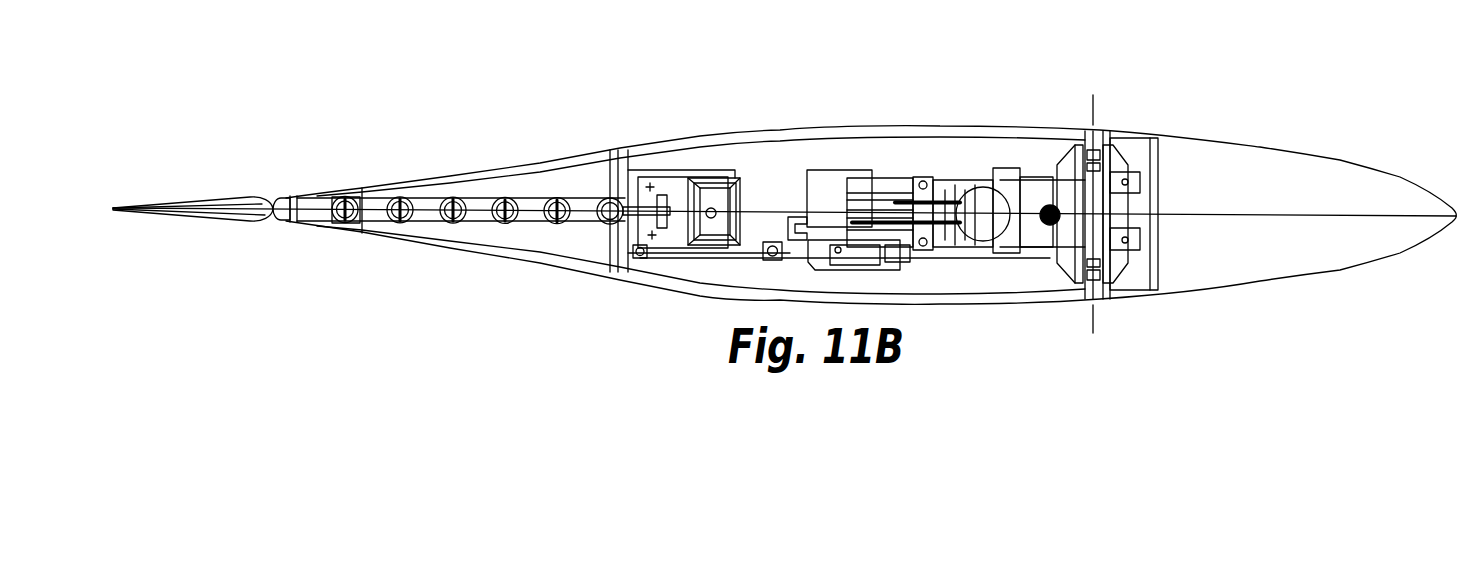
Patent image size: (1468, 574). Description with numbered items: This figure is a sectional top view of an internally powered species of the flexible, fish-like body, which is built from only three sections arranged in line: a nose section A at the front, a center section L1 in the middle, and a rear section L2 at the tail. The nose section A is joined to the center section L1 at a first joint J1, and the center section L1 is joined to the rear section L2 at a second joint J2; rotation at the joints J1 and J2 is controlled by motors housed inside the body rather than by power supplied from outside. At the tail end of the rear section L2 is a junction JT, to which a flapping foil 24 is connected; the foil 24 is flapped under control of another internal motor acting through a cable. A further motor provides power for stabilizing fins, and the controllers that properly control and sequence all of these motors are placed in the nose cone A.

The flapping foil 24 is at (167, 216).
The tail junction JT is at (292, 196).
The rear section L2 is at (521, 180).
The second joint J2 is at (620, 143).
The center section L1 is at (945, 143).
The first joint J1 is at (1098, 118).
The nose section A is at (1315, 258).